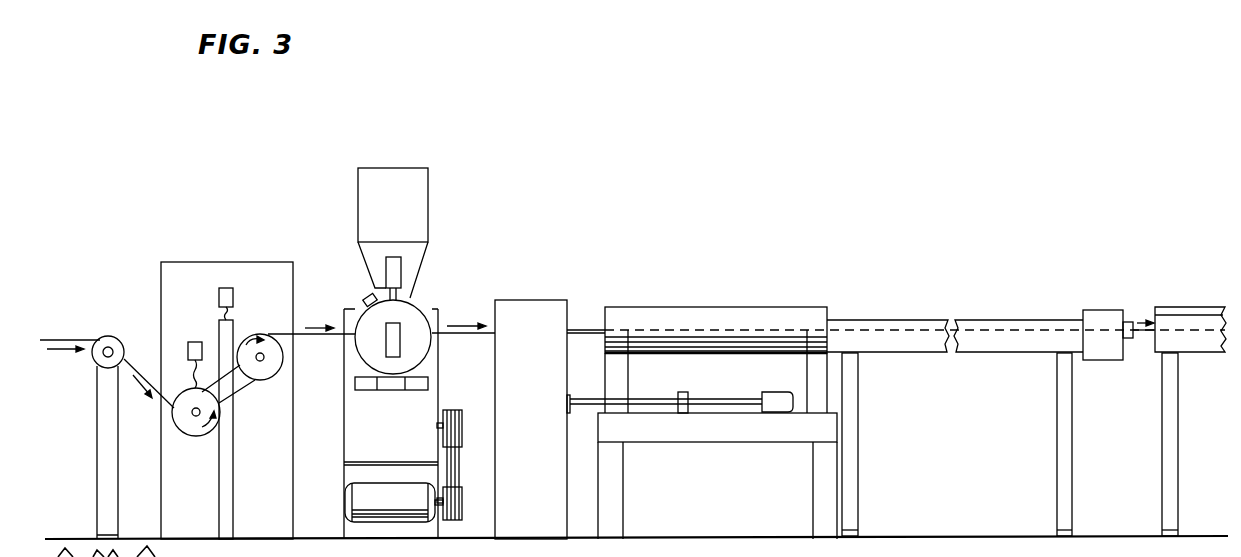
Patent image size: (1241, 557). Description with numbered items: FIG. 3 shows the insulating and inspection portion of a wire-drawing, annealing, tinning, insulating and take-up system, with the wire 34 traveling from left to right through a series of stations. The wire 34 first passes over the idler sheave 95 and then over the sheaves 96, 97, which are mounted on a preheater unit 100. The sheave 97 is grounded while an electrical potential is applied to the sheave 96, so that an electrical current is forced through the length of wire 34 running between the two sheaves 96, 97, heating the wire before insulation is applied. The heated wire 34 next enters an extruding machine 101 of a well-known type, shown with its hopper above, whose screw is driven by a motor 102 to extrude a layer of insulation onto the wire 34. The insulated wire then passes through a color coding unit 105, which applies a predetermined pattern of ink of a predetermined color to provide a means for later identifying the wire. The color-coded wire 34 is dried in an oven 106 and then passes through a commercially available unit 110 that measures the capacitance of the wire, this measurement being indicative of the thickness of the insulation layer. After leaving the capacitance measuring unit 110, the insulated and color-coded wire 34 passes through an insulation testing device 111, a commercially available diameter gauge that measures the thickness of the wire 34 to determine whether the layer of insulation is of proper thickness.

The wire 34 is at (60, 340).
The idler sheave 95 is at (112, 337).
The sheave 96 is at (194, 424).
The sheave 97 is at (270, 369).
The preheater unit 100 is at (215, 270).
The extruding machine 101 is at (413, 299).
The motor 102 is at (375, 490).
The color coding unit 105 is at (545, 302).
The oven 106 is at (716, 318).
The capacitance measuring unit 110 is at (983, 327).
The insulation testing device 111 is at (1185, 312).